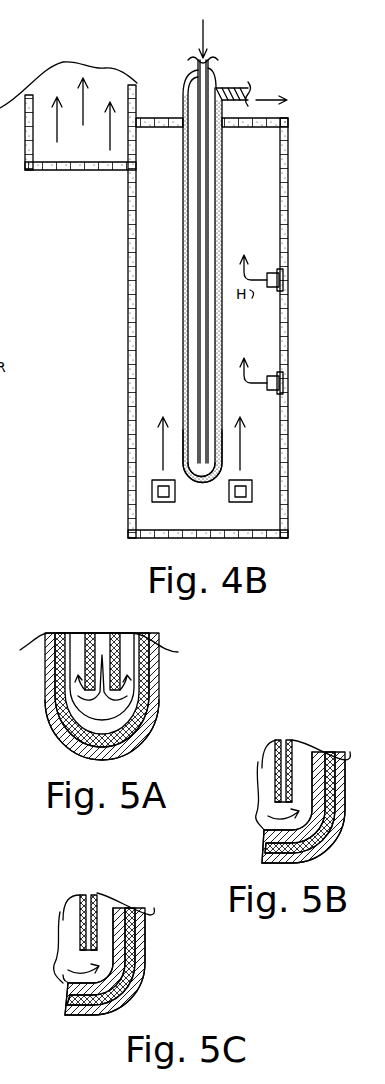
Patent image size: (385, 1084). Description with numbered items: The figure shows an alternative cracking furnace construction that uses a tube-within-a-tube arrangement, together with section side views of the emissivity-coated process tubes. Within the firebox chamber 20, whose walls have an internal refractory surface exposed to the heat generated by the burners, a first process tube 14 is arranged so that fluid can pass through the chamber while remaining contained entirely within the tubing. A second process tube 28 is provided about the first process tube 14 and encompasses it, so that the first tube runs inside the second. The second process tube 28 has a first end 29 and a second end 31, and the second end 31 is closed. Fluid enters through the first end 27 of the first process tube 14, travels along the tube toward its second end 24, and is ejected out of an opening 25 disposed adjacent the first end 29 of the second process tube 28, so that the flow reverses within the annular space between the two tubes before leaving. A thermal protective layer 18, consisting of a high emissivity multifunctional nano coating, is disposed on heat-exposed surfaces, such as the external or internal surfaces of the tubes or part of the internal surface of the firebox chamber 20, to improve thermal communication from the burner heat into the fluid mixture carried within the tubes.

In FIG. 4B, the process tube 14 is at (196, 204).
In FIG. 5A, the process tube 14 is at (91, 645).
In FIG. 5B, the process tube 14 is at (277, 767).
In FIG. 5C, the process tube 14 is at (80, 925).
In FIG. 4B, the thermal protective layer 18 is at (279, 178).
In FIG. 5C, the thermal protective layer 18 is at (131, 996).
In FIG. 4B, the firebox chamber 20 is at (127, 342).
In FIG. 5A, the second end 24 is at (120, 654).
In FIG. 4B, the opening 25 is at (185, 432).
In FIG. 4B, the first end 27 is at (193, 62).
In FIG. 4B, the second process tube 28 is at (185, 107).
In FIG. 5A, the second process tube 28 is at (150, 703).
In FIG. 5B, the second process tube 28 is at (263, 868).
In FIG. 5C, the second process tube 28 is at (134, 949).
In FIG. 4B, the first end 29 is at (214, 86).
In FIG. 4B, the second end 31 is at (205, 485).
In FIG. 5A, the second end 31 is at (252, 658).